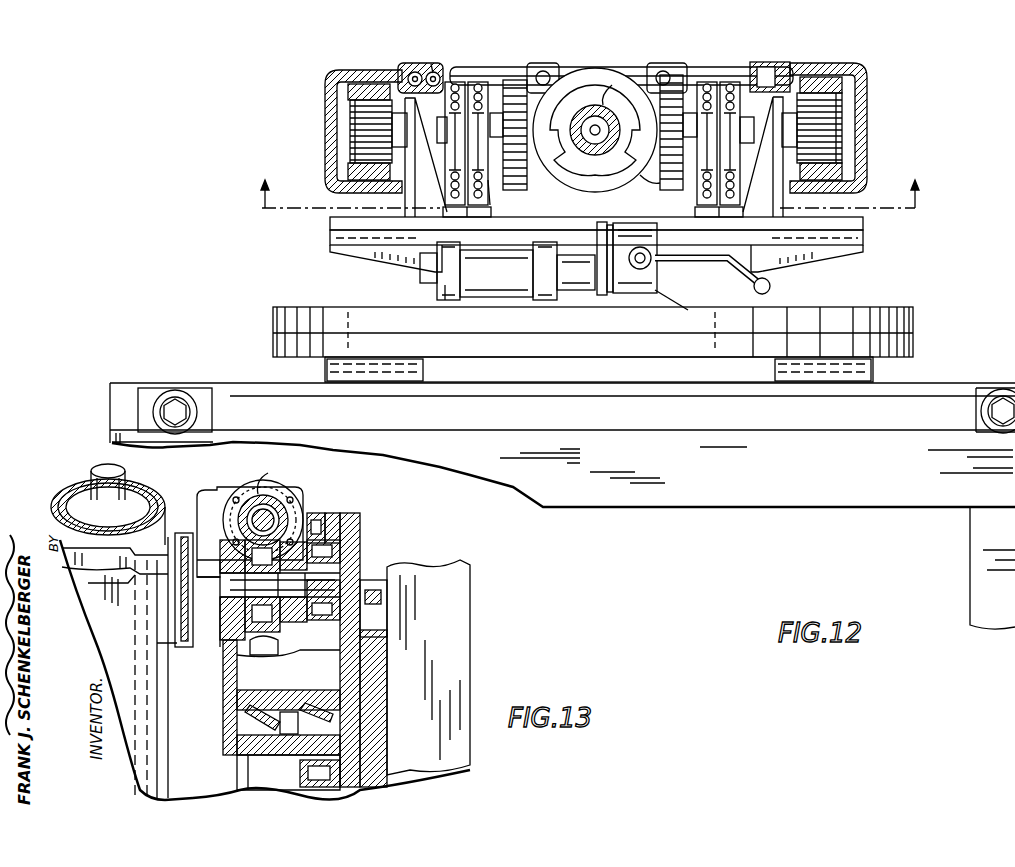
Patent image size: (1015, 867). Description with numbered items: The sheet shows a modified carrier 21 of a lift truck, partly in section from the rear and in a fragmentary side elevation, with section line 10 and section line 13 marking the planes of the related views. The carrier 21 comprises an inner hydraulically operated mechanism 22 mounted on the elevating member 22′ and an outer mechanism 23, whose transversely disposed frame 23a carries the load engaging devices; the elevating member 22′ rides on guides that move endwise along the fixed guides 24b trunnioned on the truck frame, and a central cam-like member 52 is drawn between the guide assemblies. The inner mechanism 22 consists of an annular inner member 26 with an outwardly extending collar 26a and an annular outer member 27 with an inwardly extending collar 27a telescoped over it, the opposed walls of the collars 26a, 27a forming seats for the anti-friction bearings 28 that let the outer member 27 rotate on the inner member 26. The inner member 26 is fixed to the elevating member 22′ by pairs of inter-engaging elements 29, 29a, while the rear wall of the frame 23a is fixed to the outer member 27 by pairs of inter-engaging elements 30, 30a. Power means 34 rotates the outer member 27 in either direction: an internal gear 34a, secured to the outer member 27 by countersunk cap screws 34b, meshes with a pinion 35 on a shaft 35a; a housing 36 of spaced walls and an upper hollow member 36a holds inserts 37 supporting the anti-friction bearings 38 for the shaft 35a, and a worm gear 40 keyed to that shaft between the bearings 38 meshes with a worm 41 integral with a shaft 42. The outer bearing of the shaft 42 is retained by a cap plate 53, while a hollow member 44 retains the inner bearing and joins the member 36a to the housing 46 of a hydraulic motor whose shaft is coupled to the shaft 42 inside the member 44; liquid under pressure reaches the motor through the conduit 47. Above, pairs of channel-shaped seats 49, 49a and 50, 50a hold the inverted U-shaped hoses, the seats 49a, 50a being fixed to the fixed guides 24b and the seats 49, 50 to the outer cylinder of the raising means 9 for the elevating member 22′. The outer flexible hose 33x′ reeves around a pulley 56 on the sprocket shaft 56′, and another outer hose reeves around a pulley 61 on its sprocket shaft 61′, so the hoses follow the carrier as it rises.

In FIG. 13, the cylinder 9 is at (158, 486).
In FIG. 12, the section line / shaft 10 is at (586, 95).
In FIG. 13, the section line / shaft 10 is at (92, 478).
In FIG. 12, the base plate 13 is at (528, 232).
In FIG. 12, the carrier 21 is at (626, 343).
In FIG. 12, the inner mechanism 22 is at (596, 263).
In FIG. 12, the elevating member 22′ is at (647, 183).
In FIG. 13, the elevating member 22′ is at (143, 591).
In FIG. 12, the outer mechanism 23 is at (562, 413).
In FIG. 12, the frame 23a is at (836, 390).
In FIG. 12, the fixed guides 24b is at (885, 113).
In FIG. 13, the inner member 26 is at (237, 722).
In FIG. 13, the collar 26a is at (312, 770).
In FIG. 13, the outer member 27 is at (360, 550).
In FIG. 13, the collar 27a is at (312, 697).
In FIG. 13, the anti-friction bearings 28 is at (258, 762).
In FIG. 13, the inter-engaging elements 29 is at (226, 690).
In FIG. 13, the inter-engaging elements 29a is at (207, 584).
In FIG. 13, the inter-engaging elements 30 is at (370, 637).
In FIG. 13, the inter-engaging elements 30a is at (380, 612).
In FIG. 12, the outer flexible hose 33x′ is at (438, 68).
In FIG. 12, the power means 34 is at (497, 271).
In FIG. 13, the internal gear 34a is at (322, 514).
In FIG. 13, the countersunk cap screws 34b is at (342, 530).
In FIG. 13, the pinion 35 is at (373, 608).
In FIG. 13, the shaft 35a is at (284, 613).
In FIG. 13, the housing 36 is at (357, 657).
In FIG. 12, the upper hollow member 36a is at (480, 297).
In FIG. 13, the upper hollow member 36a is at (284, 473).
In FIG. 13, the inserts 37 is at (222, 603).
In FIG. 13, the anti-friction bearings 38 is at (215, 630).
In FIG. 13, the worm gear 40 is at (288, 665).
In FIG. 13, the worm 41 is at (245, 518).
In FIG. 13, the shaft 42 is at (278, 520).
In FIG. 12, the hollow member 44 is at (583, 295).
In FIG. 12, the motor housing 46 is at (640, 295).
In FIG. 12, the conduit 47 is at (773, 286).
In FIG. 12, the seat 49 is at (518, 66).
In FIG. 12, the seat 49a is at (413, 66).
In FIG. 12, the seat 50 is at (665, 66).
In FIG. 12, the seat 50a is at (770, 62).
In FIG. 12, the cam 52 is at (594, 130).
In FIG. 12, the cap plate 53 is at (437, 282).
In FIG. 12, the pulley 56 is at (490, 185).
In FIG. 12, the shaft 56′ is at (437, 128).
In FIG. 12, the pulley 61 is at (697, 180).
In FIG. 12, the plate 61′ is at (760, 120).